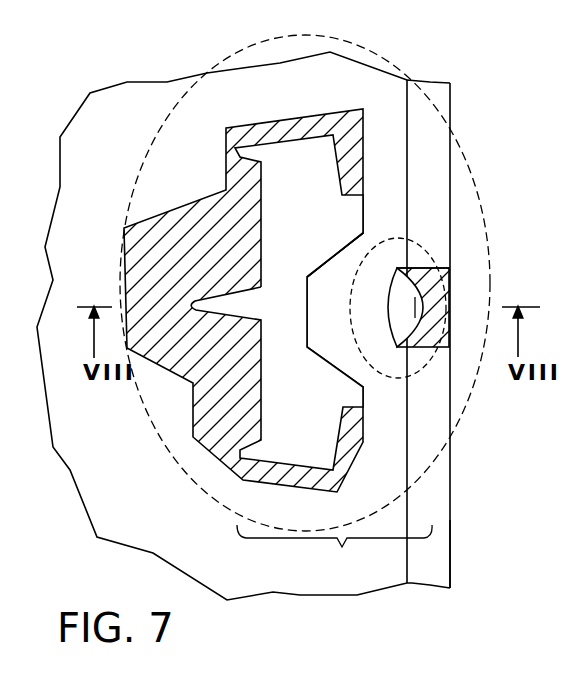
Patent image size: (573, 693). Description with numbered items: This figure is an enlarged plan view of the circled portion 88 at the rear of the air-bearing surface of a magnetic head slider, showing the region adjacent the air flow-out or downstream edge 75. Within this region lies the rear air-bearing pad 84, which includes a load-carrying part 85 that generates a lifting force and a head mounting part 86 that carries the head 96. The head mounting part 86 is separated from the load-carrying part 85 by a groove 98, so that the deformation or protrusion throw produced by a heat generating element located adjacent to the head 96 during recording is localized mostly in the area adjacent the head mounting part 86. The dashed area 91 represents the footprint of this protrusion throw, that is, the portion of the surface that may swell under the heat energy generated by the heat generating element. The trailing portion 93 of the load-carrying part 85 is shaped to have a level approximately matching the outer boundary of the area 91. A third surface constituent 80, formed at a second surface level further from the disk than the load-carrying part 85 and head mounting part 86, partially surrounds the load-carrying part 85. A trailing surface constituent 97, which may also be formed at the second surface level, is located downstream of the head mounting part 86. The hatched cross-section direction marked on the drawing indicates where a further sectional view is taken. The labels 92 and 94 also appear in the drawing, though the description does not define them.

The downstream edge 75 is at (452, 115).
The third surface constituent 80 is at (197, 265).
The rear air-bearing pad 84 is at (334, 552).
The load-carrying part 85 is at (316, 185).
The head mounting part 86 is at (397, 347).
The circled portion 88 is at (176, 104).
The area 91 is at (393, 238).
The housing 92 is at (382, 567).
The trailing portion 93 is at (340, 252).
The flange 94 is at (434, 540).
The head 96 is at (425, 307).
The trailing surface constituent 97 is at (442, 268).
The groove 98 is at (344, 321).